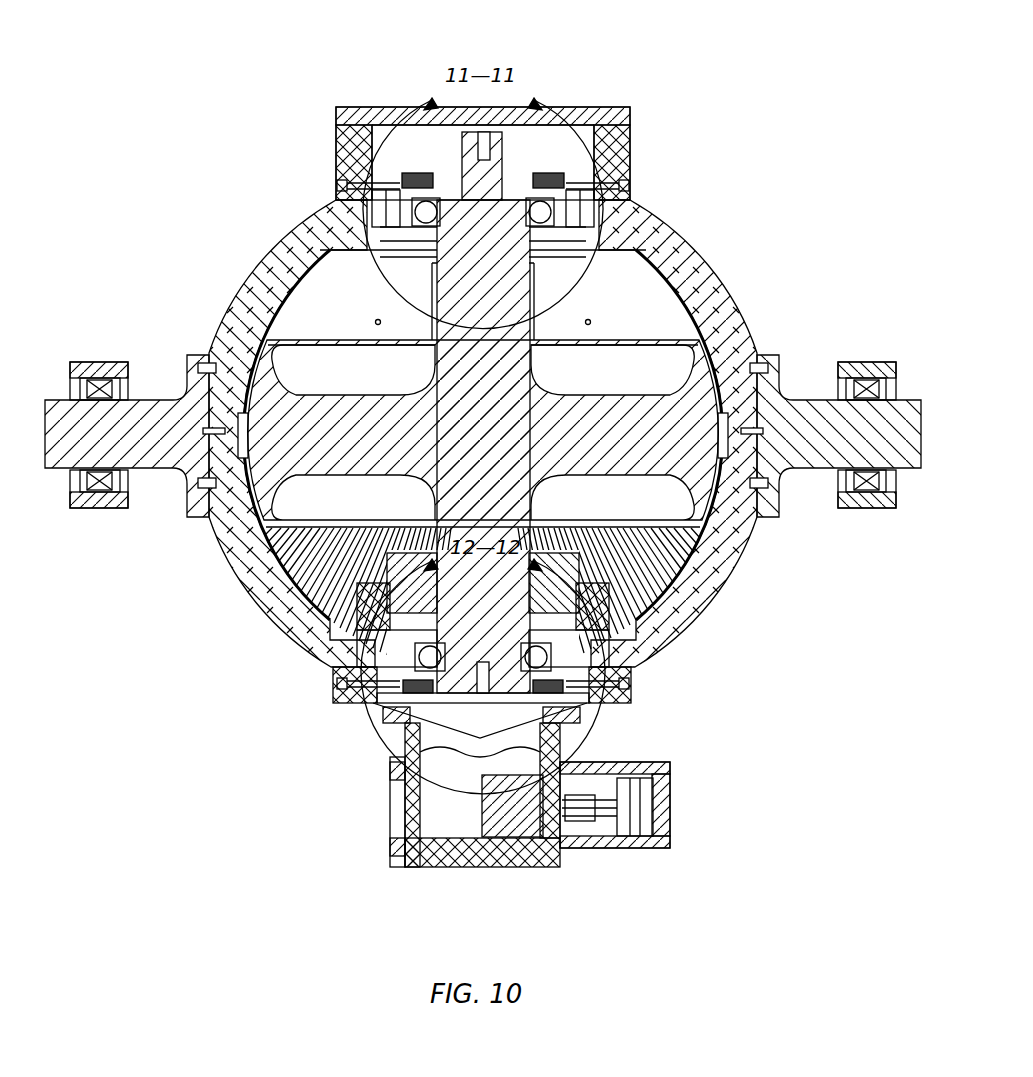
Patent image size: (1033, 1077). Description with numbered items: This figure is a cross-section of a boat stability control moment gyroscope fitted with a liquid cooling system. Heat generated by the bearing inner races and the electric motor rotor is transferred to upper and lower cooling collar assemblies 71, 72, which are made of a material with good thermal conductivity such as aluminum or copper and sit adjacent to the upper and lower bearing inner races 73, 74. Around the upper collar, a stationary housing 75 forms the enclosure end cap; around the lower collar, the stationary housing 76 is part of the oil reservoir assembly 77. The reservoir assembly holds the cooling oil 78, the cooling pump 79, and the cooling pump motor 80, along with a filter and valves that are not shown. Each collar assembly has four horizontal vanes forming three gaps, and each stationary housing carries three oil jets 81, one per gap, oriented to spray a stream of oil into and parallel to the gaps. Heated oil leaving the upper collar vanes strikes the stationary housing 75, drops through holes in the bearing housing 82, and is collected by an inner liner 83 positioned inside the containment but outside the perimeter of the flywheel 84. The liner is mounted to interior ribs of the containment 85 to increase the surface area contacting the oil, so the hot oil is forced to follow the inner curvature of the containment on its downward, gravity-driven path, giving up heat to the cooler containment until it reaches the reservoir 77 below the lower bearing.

The upper cooling collar assembly 71 is at (521, 183).
The lower cooling collar assembly 72 is at (408, 720).
The upper bearing inner race 73 is at (527, 205).
The lower bearing inner race 74 is at (572, 700).
The stationary housing 75 is at (345, 145).
The stationary housing 76 is at (387, 693).
The oil reservoir assembly 77 is at (480, 856).
The cooling oil 78 is at (447, 808).
The cooling pump 79 is at (524, 815).
The cooling pump motor 80 is at (597, 827).
The oil jets 81 is at (343, 186).
The bearing housing 82 is at (399, 213).
The inner liner 83 is at (627, 243).
The flywheel 84 is at (642, 369).
The containment 85 is at (657, 550).